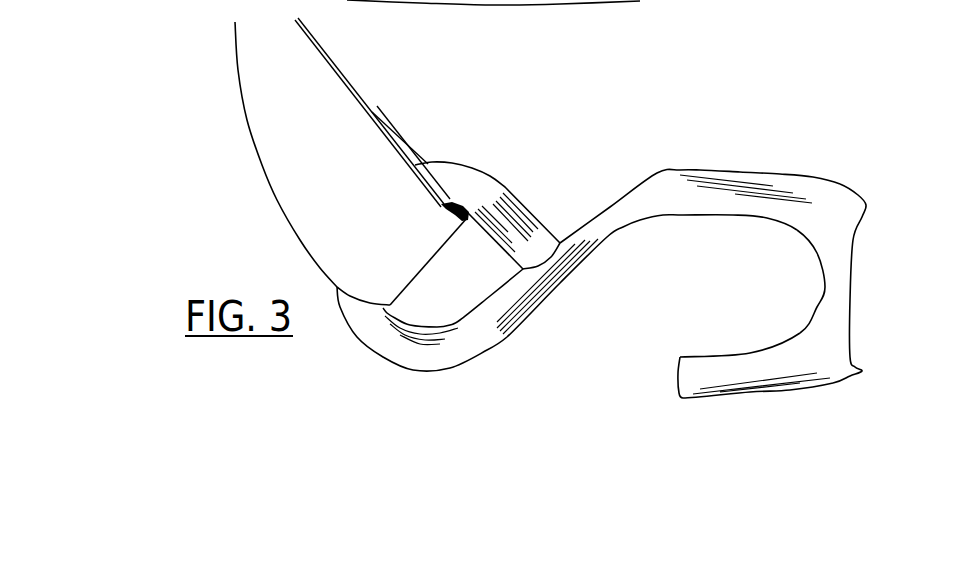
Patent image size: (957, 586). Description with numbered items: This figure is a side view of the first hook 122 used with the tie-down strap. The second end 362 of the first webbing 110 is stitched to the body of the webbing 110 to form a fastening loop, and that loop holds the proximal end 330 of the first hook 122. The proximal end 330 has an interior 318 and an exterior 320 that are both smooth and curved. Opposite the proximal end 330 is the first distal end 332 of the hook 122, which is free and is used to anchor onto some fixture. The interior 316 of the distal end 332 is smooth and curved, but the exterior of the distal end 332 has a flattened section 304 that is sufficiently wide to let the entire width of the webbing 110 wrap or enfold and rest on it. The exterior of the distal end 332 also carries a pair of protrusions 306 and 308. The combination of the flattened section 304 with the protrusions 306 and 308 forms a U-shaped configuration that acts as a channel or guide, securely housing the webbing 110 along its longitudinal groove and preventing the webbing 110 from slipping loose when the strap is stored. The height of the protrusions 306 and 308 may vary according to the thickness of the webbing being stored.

The first webbing 110 is at (243, 122).
The first hook 122 is at (590, 132).
The flattened section 304 is at (850, 278).
The protrusion 306 is at (880, 208).
The protrusion 308 is at (868, 371).
The interior of distal end 316 is at (823, 287).
The interior of proximal end 318 is at (402, 318).
The exterior of proximal end 320 is at (350, 335).
The proximal end of first hook 330 is at (486, 158).
The first distal end of first hook 332 is at (829, 163).
The second end of webbing 362 is at (423, 262).